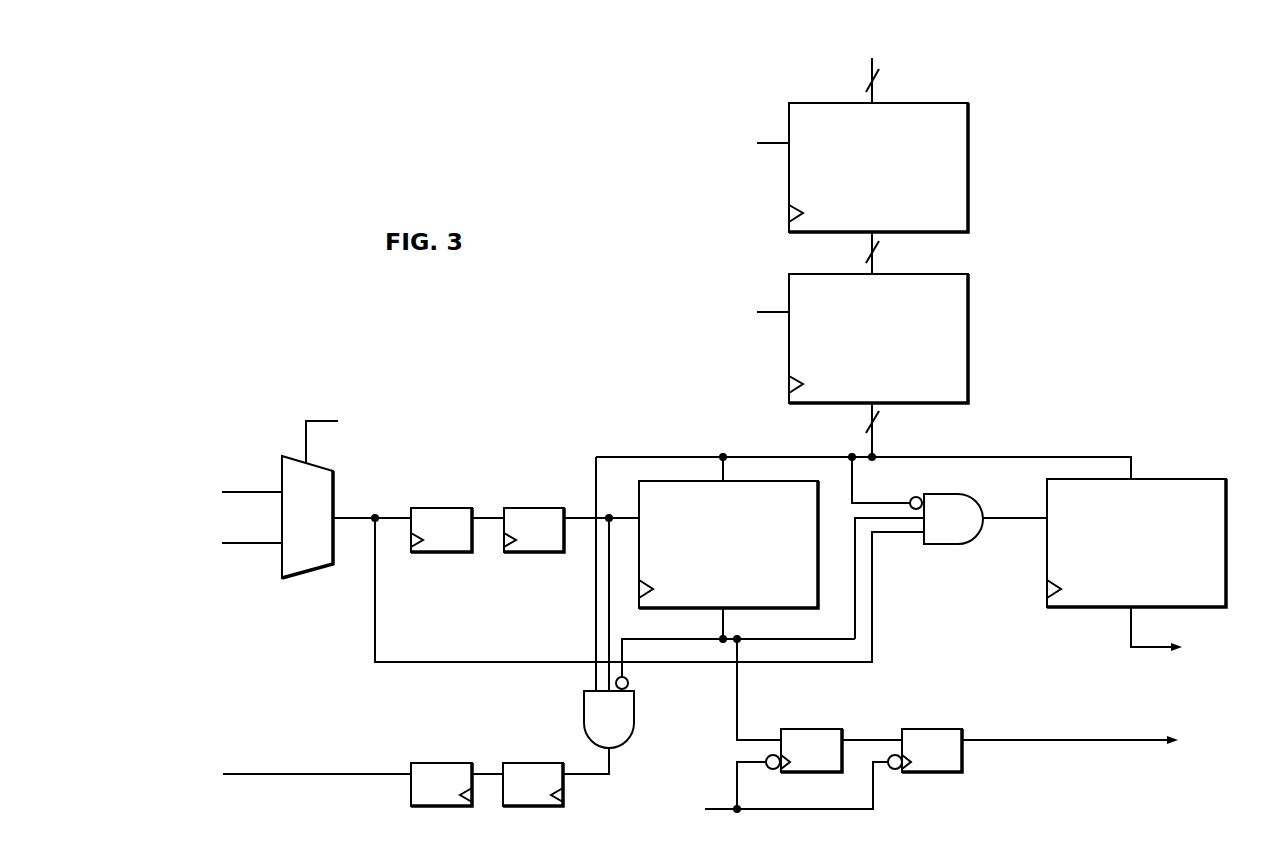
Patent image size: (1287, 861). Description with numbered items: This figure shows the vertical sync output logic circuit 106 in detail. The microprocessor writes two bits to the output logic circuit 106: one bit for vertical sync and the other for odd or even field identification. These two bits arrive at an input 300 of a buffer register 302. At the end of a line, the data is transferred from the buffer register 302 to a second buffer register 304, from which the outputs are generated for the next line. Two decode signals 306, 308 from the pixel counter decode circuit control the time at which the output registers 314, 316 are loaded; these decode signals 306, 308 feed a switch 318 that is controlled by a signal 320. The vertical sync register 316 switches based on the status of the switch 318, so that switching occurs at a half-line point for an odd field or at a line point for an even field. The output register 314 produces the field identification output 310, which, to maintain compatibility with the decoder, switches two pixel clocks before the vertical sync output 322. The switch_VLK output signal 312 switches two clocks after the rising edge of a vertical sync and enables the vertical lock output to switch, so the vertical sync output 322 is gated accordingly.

The output logic circuit 106 is at (1191, 84).
The input 300 is at (956, 41).
The buffer register 302 is at (944, 182).
The second buffer register 304 is at (944, 352).
The decode signal 306 is at (153, 472).
The decode signal 308 is at (143, 568).
The field identification output 310 is at (1197, 672).
The switch_VLK output signal 312 is at (154, 752).
The output register 314 is at (1202, 555).
The vertical sync register 316 is at (793, 557).
The switch 318 is at (303, 578).
The signal 320 is at (368, 400).
The vertical sync output 322 is at (1232, 762).